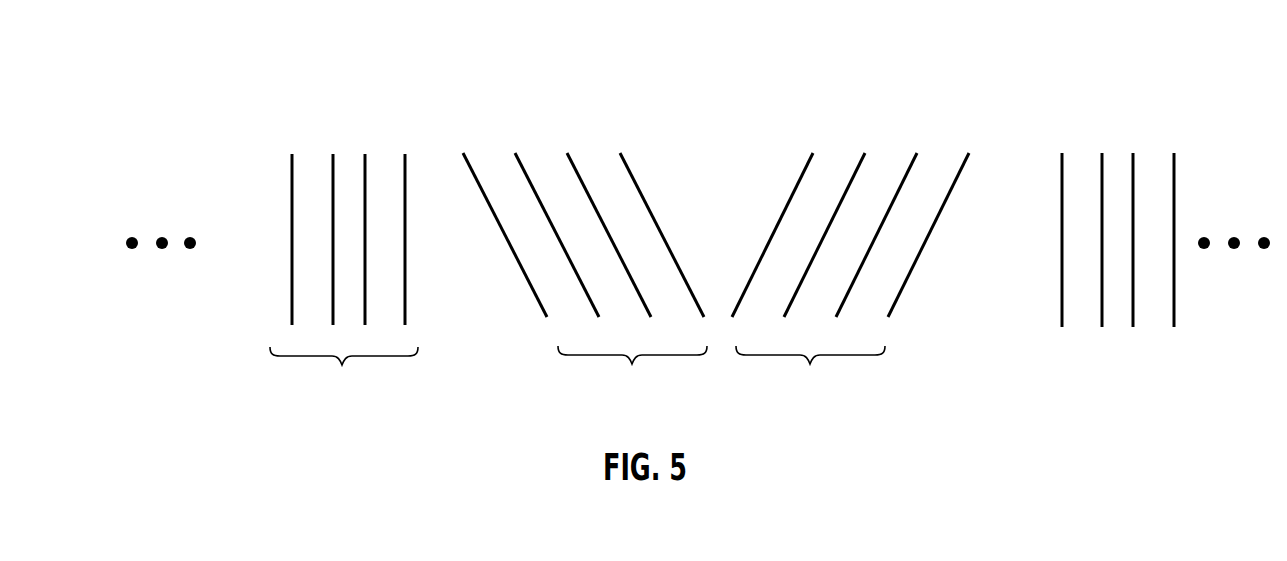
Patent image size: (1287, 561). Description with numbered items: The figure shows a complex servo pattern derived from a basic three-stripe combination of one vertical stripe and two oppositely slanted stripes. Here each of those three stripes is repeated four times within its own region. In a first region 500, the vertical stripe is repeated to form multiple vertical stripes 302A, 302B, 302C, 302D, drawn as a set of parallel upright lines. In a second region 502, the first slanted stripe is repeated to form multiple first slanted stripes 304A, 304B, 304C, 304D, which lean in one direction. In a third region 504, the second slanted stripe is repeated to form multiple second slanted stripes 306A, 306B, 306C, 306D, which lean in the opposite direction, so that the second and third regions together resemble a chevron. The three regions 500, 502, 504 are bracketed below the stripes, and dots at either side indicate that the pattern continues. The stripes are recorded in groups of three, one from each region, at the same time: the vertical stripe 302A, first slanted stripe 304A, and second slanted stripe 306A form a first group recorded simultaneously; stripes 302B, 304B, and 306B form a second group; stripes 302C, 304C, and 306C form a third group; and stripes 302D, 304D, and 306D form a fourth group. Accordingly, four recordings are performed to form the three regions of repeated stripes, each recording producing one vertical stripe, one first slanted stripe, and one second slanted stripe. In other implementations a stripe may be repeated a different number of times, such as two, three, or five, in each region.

The vertical stripe 302A is at (292, 163).
The vertical stripe 302B is at (331, 197).
The vertical stripe 302C is at (363, 163).
The vertical stripe 302D is at (403, 163).
The first slanted stripe 304A is at (468, 163).
The first slanted stripe 304B is at (522, 163).
The first slanted stripe 304C is at (573, 163).
The first slanted stripe 304D is at (627, 163).
The second slanted stripe 306A is at (803, 163).
The second slanted stripe 306B is at (857, 163).
The second slanted stripe 306C is at (908, 163).
The second slanted stripe 306D is at (962, 163).
The first region 500 is at (344, 371).
The second region 502 is at (632, 370).
The third region 504 is at (810, 370).